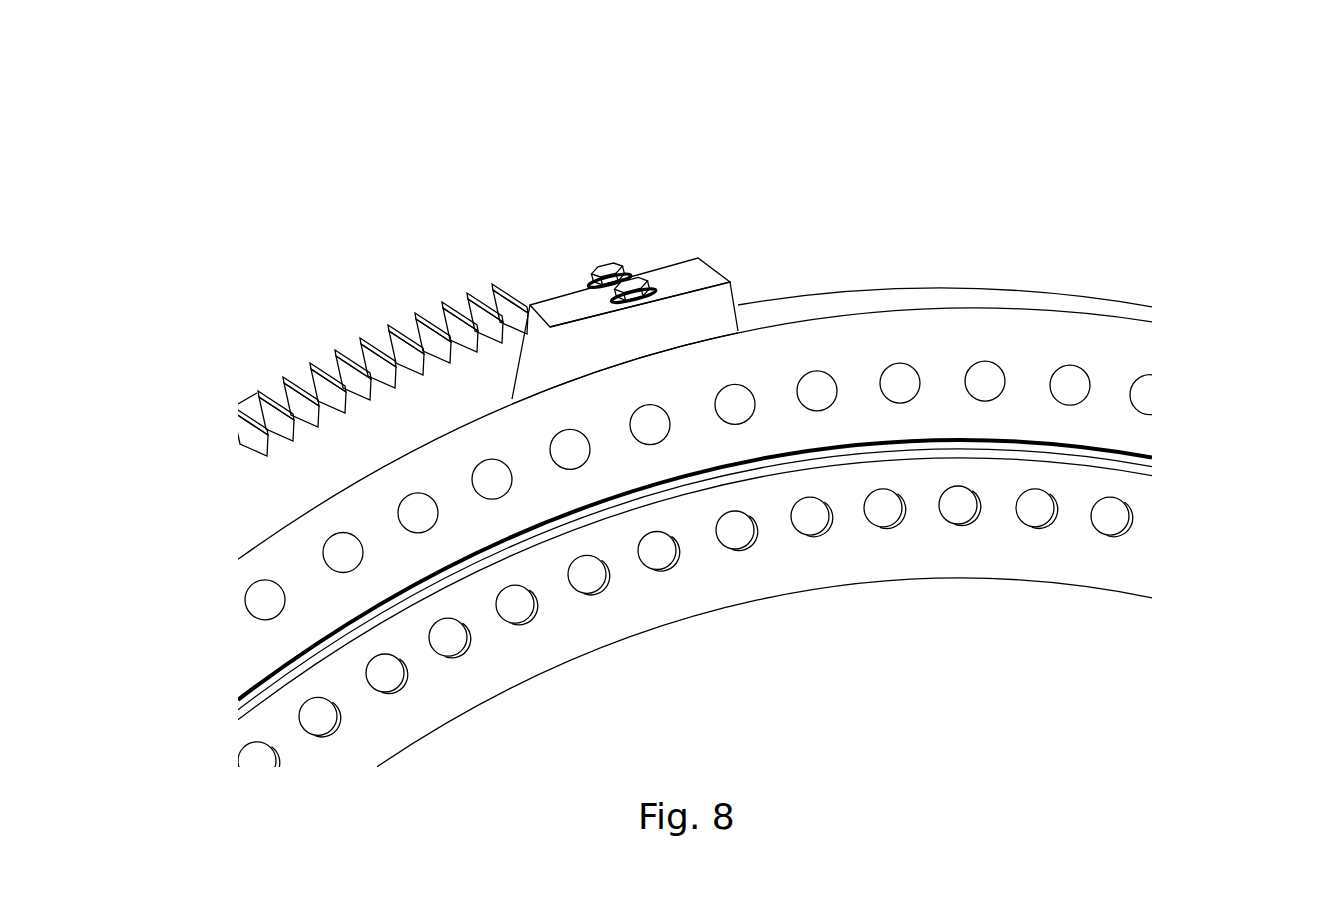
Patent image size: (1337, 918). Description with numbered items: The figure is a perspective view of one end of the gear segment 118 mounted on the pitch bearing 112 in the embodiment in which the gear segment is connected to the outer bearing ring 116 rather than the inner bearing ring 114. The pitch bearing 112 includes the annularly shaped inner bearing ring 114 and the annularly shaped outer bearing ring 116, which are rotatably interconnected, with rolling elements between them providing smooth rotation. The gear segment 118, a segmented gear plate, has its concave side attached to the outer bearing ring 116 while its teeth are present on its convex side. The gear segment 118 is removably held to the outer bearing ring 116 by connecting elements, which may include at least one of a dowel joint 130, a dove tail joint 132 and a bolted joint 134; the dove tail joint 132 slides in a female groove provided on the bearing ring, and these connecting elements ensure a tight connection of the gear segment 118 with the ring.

The pitch bearing 112 is at (1188, 156).
The inner bearing ring 114 is at (1081, 490).
The outer bearing ring 116 is at (932, 330).
The gear segment 118 is at (420, 400).
The dowel joint 130 is at (580, 292).
The dove tail joint 132 is at (510, 397).
The bolted joint 134 is at (648, 270).